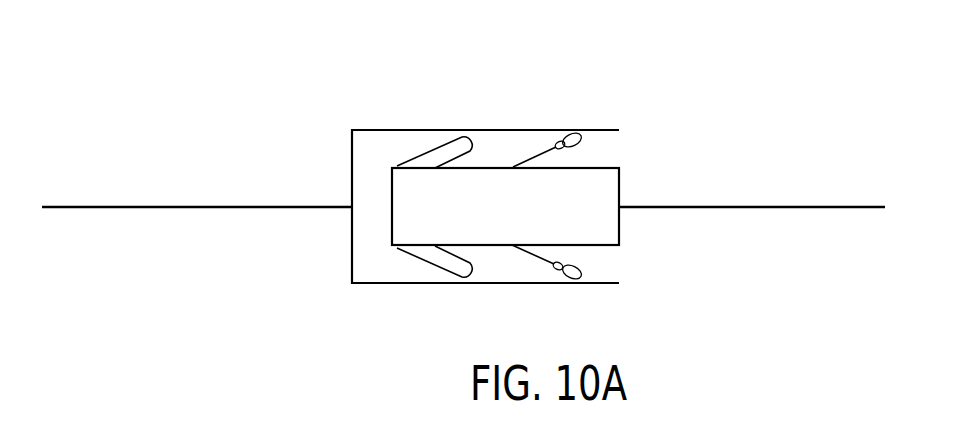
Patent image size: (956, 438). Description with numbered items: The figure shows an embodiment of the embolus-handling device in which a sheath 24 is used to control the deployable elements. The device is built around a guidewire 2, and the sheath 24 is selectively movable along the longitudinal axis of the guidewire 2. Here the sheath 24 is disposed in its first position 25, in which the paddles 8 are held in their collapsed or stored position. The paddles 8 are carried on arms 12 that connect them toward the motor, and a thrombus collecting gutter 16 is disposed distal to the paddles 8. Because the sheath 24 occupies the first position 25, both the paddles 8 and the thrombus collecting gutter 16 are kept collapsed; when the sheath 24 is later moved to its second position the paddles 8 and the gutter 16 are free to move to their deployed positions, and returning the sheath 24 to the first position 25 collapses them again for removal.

The guidewire 2 is at (772, 205).
The paddles 8 is at (579, 143).
The arms 12 is at (536, 144).
The thrombus collecting gutter 16 is at (425, 257).
The sheath 24 is at (373, 130).
The first position 25 is at (483, 108).